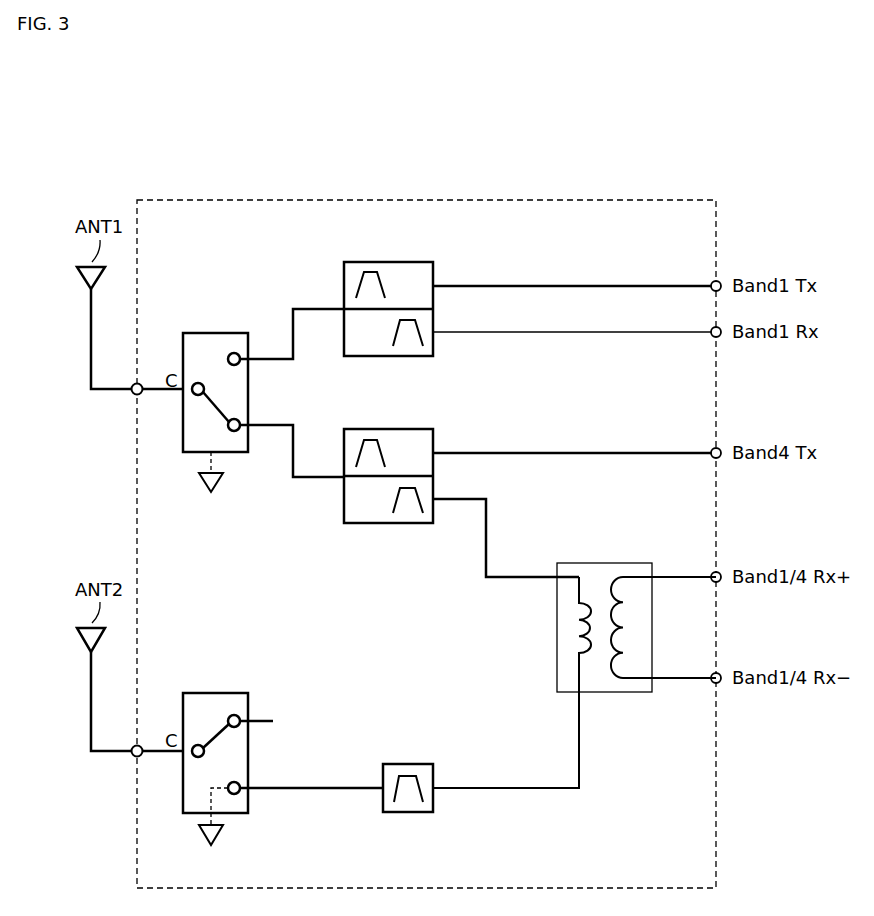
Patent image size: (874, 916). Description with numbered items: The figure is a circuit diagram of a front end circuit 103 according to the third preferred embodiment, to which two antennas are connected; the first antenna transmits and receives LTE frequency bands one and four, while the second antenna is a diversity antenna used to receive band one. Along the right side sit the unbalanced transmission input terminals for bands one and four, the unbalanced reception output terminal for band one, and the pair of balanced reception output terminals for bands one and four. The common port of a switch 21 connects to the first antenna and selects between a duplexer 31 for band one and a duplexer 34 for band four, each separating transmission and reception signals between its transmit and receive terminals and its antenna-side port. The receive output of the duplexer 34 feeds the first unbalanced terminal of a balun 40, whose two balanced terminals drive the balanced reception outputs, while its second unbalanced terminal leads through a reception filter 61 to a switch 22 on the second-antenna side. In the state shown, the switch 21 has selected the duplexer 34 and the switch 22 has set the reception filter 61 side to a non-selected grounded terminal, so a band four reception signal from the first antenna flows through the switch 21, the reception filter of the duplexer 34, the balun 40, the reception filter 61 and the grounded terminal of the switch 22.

The front end circuit 103 is at (493, 198).
The switch 21 is at (217, 333).
The switch 22 is at (217, 693).
The duplexer 31 is at (433, 262).
The duplexer 34 is at (433, 429).
The balun 40 is at (605, 563).
The reception filter 61 is at (410, 764).